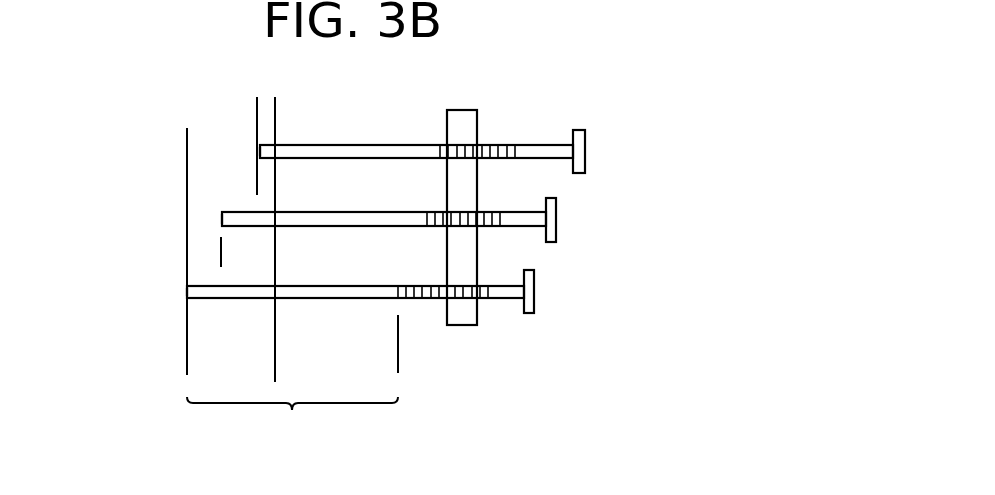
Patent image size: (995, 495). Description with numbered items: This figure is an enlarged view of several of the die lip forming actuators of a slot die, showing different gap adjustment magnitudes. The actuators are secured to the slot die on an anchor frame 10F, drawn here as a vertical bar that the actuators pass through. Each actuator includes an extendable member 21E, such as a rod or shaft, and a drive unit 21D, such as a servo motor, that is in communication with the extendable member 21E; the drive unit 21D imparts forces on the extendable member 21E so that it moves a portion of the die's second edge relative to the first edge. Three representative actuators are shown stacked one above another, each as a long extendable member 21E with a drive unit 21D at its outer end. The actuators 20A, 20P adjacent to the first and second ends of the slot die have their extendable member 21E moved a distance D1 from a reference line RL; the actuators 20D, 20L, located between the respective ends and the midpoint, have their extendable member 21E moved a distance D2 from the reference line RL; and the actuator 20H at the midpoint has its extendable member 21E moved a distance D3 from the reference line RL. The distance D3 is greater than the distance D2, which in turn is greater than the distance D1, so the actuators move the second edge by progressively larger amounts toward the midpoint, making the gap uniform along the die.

The anchor frame 10F is at (462, 119).
The actuator 20A is at (501, 139).
The actuator 20P is at (587, 145).
The actuator 20D is at (467, 208).
The actuator 20L is at (558, 214).
The actuator 20H is at (536, 288).
The drive unit 21D is at (580, 135).
The extendable member 21E is at (298, 153).
The distance D1 is at (223, 113).
The distance D2 is at (190, 252).
The distance D3 is at (148, 343).
The reference line RL is at (275, 370).